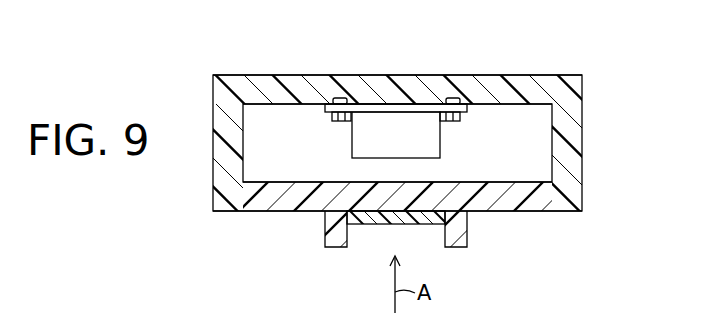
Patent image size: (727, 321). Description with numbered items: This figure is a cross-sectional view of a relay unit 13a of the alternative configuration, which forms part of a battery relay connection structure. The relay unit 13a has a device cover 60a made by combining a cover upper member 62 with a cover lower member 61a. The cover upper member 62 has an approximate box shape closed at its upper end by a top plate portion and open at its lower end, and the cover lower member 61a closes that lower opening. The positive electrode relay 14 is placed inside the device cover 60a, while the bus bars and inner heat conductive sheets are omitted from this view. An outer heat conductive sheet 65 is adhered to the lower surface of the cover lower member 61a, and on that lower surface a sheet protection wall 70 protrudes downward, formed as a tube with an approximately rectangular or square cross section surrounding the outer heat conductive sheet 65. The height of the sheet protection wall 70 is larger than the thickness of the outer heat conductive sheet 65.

The relay unit 13a is at (540, 58).
The device cover 60a is at (585, 114).
The cover upper member 62 is at (298, 75).
The cover lower member 61a is at (531, 212).
The sheet protection wall 70 is at (325, 234).
The outer heat conductive sheet 65 is at (367, 225).
The positive electrode relay 14 is at (437, 118).